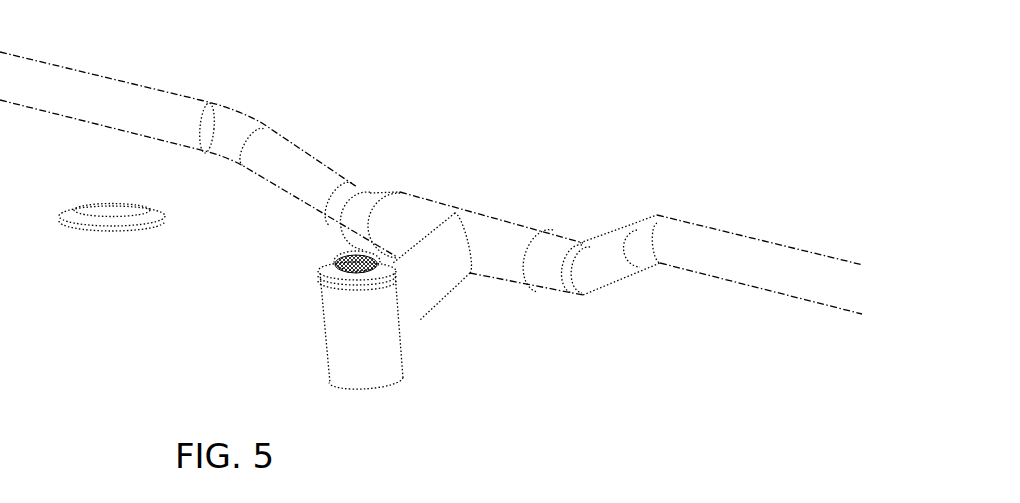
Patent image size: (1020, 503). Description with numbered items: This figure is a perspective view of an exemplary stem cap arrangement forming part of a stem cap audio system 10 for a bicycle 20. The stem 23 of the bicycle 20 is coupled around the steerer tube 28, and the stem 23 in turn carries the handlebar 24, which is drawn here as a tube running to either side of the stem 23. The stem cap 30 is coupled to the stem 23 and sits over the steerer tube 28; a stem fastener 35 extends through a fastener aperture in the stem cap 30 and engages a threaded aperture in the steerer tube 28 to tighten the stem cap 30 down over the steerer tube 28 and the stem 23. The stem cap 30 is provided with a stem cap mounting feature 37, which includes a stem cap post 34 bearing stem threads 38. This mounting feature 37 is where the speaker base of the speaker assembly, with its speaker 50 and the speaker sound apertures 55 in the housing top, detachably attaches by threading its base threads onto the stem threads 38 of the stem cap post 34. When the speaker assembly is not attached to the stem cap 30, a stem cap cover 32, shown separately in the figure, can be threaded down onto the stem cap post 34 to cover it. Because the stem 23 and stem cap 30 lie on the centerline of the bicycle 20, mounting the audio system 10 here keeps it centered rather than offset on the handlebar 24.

The stem cap audio system 10 is at (457, 101).
The bicycle 20 is at (213, 130).
The stem 23 is at (347, 325).
The handlebar 24 is at (670, 233).
The steerer tube 28 is at (400, 262).
The stem cap 30 is at (331, 270).
The stem cap cover 32 is at (105, 210).
The stem cap post 34 is at (352, 260).
The stem fastener 35 is at (351, 257).
The stem cap mounting feature 37 is at (365, 265).
The stem threads 38 is at (338, 262).
The speaker 50 is at (390, 227).
The speaker sound apertures 55 is at (360, 207).